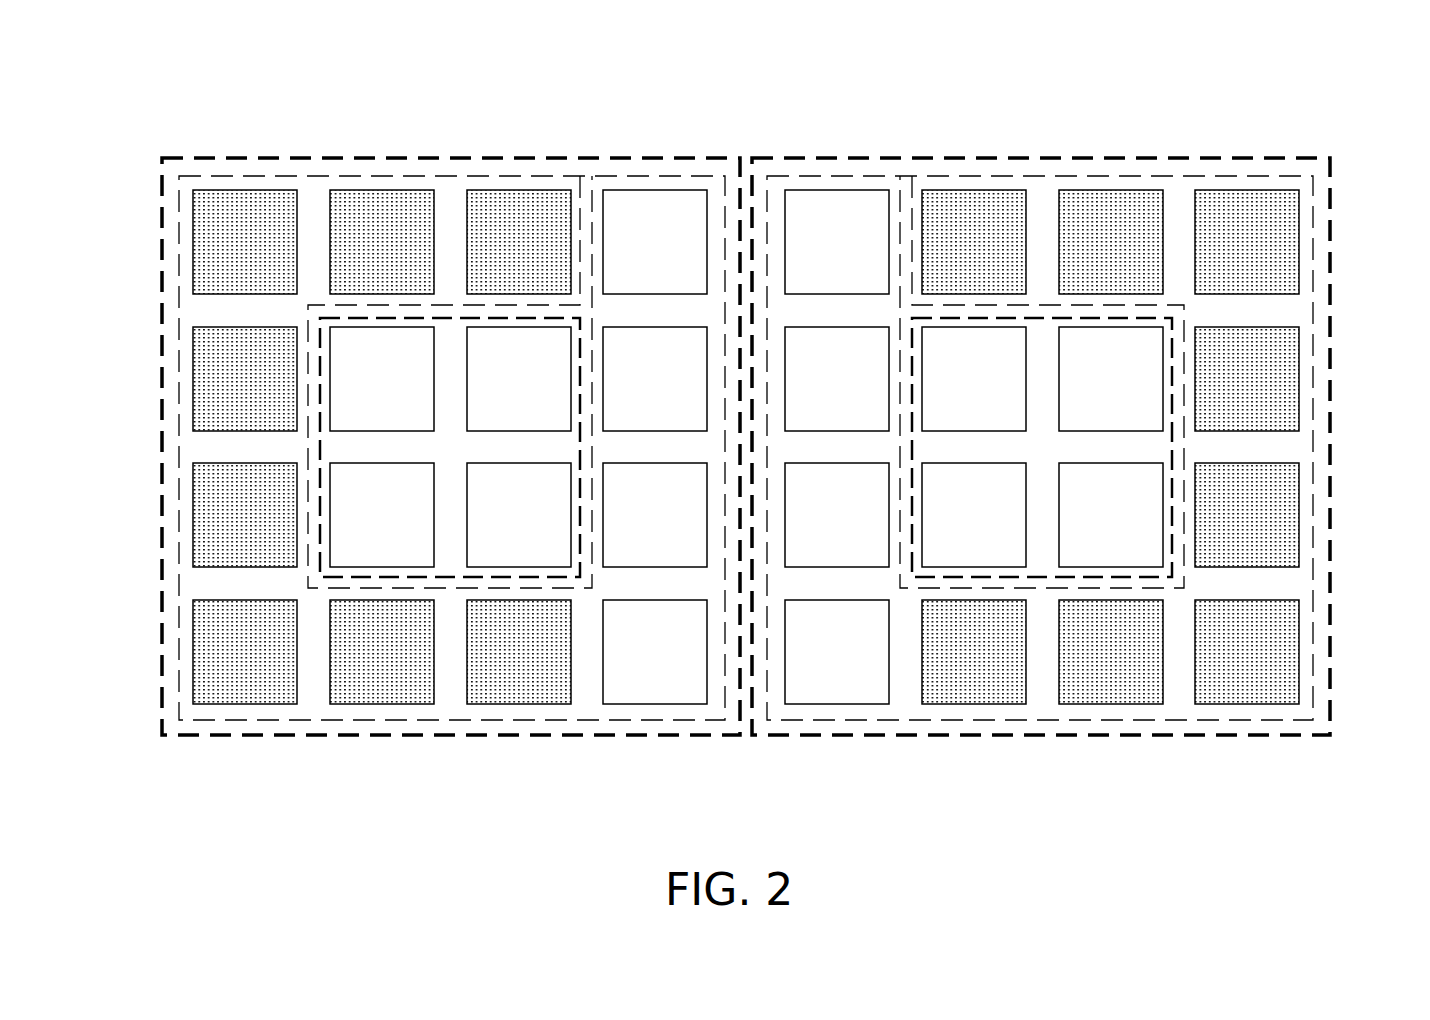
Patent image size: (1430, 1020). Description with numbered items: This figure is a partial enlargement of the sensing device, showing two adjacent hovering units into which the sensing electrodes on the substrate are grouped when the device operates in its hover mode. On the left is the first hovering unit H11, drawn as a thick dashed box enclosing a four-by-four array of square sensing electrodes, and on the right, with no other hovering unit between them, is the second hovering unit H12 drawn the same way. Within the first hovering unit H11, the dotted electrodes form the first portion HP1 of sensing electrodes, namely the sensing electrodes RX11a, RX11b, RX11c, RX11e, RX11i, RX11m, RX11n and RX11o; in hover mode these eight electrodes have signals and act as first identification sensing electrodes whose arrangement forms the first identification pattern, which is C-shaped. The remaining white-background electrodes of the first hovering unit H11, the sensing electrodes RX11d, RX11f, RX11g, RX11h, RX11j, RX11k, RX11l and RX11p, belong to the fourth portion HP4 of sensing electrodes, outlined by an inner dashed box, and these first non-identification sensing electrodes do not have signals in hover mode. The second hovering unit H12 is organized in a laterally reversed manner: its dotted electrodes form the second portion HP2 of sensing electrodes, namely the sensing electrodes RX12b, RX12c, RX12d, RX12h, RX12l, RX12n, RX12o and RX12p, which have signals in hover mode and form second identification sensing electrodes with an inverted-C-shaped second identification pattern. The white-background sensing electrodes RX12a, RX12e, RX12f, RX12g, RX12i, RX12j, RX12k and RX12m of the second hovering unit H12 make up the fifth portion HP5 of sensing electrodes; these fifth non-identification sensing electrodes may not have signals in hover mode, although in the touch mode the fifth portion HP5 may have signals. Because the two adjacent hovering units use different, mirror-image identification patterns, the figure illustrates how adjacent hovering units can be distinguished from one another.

The first portion of sensing electrodes HP1 is at (163, 328).
The second portion of sensing electrodes HP2 is at (1330, 326).
The first hovering unit H11 is at (180, 410).
The second hovering unit H12 is at (1313, 410).
The fourth portion of sensing electrodes HP4 is at (320, 463).
The fifth portion of sensing electrodes HP5 is at (1172, 462).
The sensing electrode RX11a is at (210, 228).
The sensing electrode RX11b is at (382, 205).
The sensing electrode RX11c is at (520, 235).
The sensing electrode RX11d is at (670, 223).
The sensing electrode RX11e is at (248, 352).
The sensing electrode RX11f is at (360, 368).
The sensing electrode RX11g is at (495, 378).
The sensing electrode RX11h is at (628, 367).
The sensing electrode RX11i is at (248, 540).
The sensing electrode RX11j is at (360, 525).
The sensing electrode RX11k is at (495, 513).
The sensing electrode RX11l is at (628, 525).
The sensing electrode RX11m is at (210, 663).
The sensing electrode RX11n is at (382, 687).
The sensing electrode RX11o is at (520, 655).
The sensing electrode RX11p is at (670, 678).
The sensing electrode RX12a is at (822, 223).
The sensing electrode RX12b is at (970, 235).
The sensing electrode RX12c is at (1112, 205).
The sensing electrode RX12d is at (1282, 228).
The sensing electrode RX12e is at (863, 367).
The sensing electrode RX12f is at (995, 378).
The sensing electrode RX12g is at (1132, 368).
The sensing electrode RX12h is at (1243, 352).
The sensing electrode RX12i is at (863, 525).
The sensing electrode RX12j is at (995, 513).
The sensing electrode RX12k is at (1132, 525).
The sensing electrode RX12l is at (1243, 540).
The sensing electrode RX12m is at (825, 678).
The sensing electrode RX12n is at (975, 655).
The sensing electrode RX12o is at (1112, 685).
The sensing electrode RX12p is at (1282, 663).